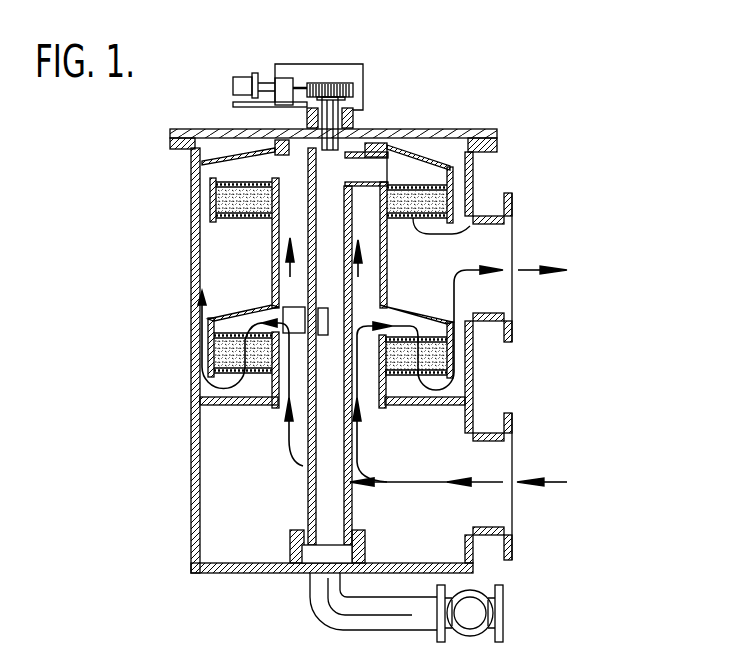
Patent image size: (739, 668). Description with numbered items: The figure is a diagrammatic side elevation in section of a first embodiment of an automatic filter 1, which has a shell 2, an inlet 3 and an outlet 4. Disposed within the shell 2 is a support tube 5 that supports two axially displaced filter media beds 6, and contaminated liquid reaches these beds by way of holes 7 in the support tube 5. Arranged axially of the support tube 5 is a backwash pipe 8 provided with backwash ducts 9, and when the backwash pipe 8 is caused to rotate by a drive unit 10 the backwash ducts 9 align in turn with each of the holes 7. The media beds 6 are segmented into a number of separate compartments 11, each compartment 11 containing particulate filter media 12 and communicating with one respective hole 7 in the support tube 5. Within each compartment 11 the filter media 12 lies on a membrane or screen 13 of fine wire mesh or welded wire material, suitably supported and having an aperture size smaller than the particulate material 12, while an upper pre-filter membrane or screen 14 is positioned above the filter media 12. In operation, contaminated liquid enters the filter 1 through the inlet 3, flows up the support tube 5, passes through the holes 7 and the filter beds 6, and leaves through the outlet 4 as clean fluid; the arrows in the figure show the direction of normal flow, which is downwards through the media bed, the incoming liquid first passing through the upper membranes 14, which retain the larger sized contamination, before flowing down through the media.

The automatic filter 1 is at (343, 32).
The shell 2 is at (190, 487).
The inlet 3 is at (500, 497).
The outlet 4 is at (497, 247).
The support tube 5 is at (273, 258).
The filter media beds 6 is at (230, 217).
The holes 7 is at (392, 171).
The backwash pipe 8 is at (288, 414).
The backwash ducts 9 is at (365, 143).
The drive unit 10 is at (300, 68).
The compartments 11 is at (202, 163).
The particulate filter media 12 is at (213, 358).
The membrane or screen 13 is at (470, 226).
The upper pre-filter membrane or screen 14 is at (232, 183).